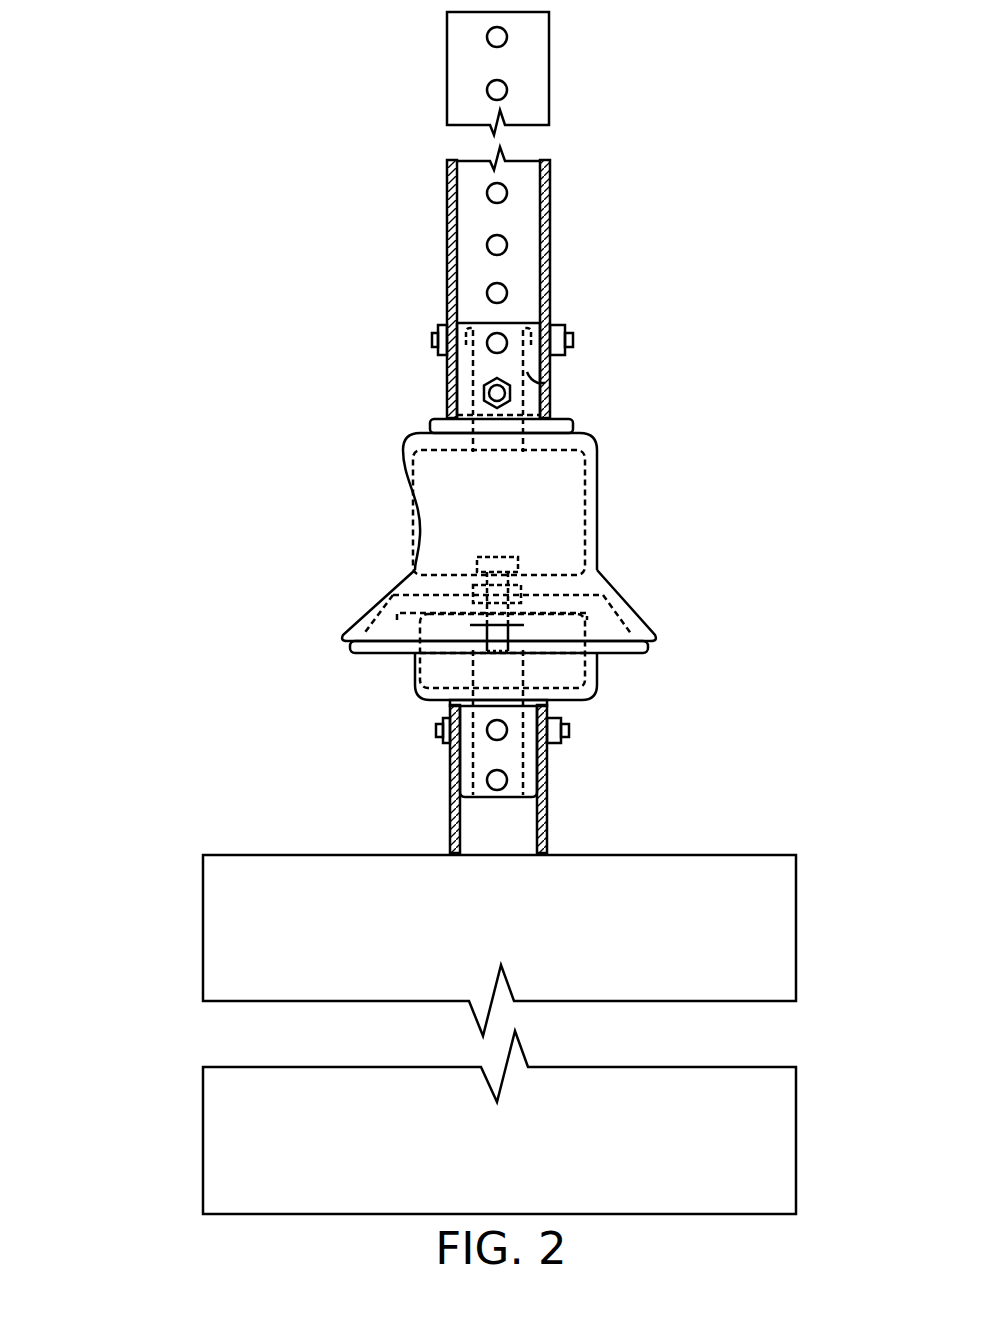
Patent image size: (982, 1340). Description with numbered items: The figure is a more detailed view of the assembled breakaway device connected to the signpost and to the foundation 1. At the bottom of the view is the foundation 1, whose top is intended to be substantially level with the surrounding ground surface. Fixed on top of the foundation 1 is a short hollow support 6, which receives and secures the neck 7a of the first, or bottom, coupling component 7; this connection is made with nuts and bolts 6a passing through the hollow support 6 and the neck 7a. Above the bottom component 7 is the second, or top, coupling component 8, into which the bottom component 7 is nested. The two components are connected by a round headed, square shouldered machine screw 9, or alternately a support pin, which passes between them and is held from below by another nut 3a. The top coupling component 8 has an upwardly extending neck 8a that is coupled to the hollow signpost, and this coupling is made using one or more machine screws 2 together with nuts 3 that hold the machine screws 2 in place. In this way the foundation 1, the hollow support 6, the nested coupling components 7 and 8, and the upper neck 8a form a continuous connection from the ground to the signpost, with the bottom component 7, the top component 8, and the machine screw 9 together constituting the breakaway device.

The foundation 1 is at (203, 908).
The machine screw 2 is at (432, 337).
The nut 3 is at (555, 327).
The nut 3a is at (513, 633).
The hollow support 6 is at (547, 765).
The nuts and bolts 6a is at (433, 742).
The bottom coupling component 7 is at (417, 685).
The neck 7a is at (547, 783).
The top coupling component 8 is at (410, 455).
The neck 8a is at (535, 380).
The machine screw 9 is at (488, 557).